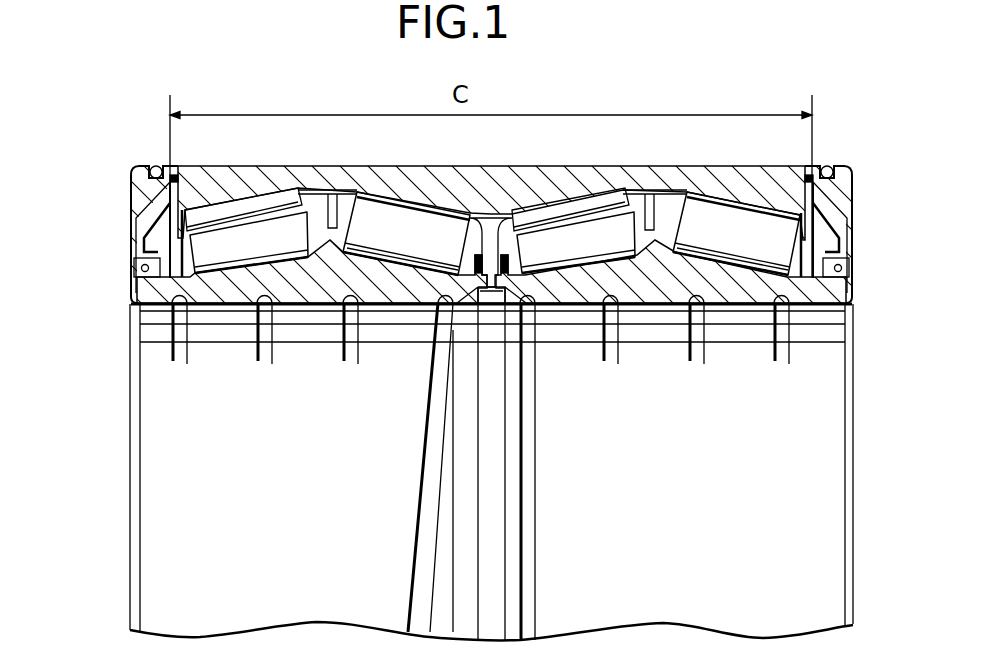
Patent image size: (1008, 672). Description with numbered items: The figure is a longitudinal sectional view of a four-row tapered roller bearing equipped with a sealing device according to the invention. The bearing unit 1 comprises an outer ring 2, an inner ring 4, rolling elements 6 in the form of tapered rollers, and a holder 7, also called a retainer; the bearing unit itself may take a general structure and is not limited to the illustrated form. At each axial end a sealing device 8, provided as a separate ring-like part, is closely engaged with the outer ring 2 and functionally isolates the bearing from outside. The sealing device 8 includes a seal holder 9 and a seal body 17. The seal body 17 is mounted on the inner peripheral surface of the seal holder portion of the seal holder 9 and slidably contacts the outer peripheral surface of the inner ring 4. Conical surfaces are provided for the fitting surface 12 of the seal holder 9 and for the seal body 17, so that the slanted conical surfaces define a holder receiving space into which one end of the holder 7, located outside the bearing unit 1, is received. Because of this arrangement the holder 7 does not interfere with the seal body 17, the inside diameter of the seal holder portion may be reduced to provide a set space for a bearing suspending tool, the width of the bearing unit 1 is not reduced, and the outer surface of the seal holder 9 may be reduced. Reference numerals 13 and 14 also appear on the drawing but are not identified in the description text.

The bearing unit 1 is at (407, 156).
The outer ring 2 is at (273, 165).
The inner ring 4 is at (157, 311).
The rolling element 6 is at (230, 267).
The holder 7 is at (223, 213).
The sealing device 8 is at (98, 192).
The seal holder 9 is at (110, 175).
The fitting surface 12 is at (148, 218).
The seal cover 13 is at (141, 165).
The O-ring 14 is at (157, 163).
The seal body 17 is at (130, 248).